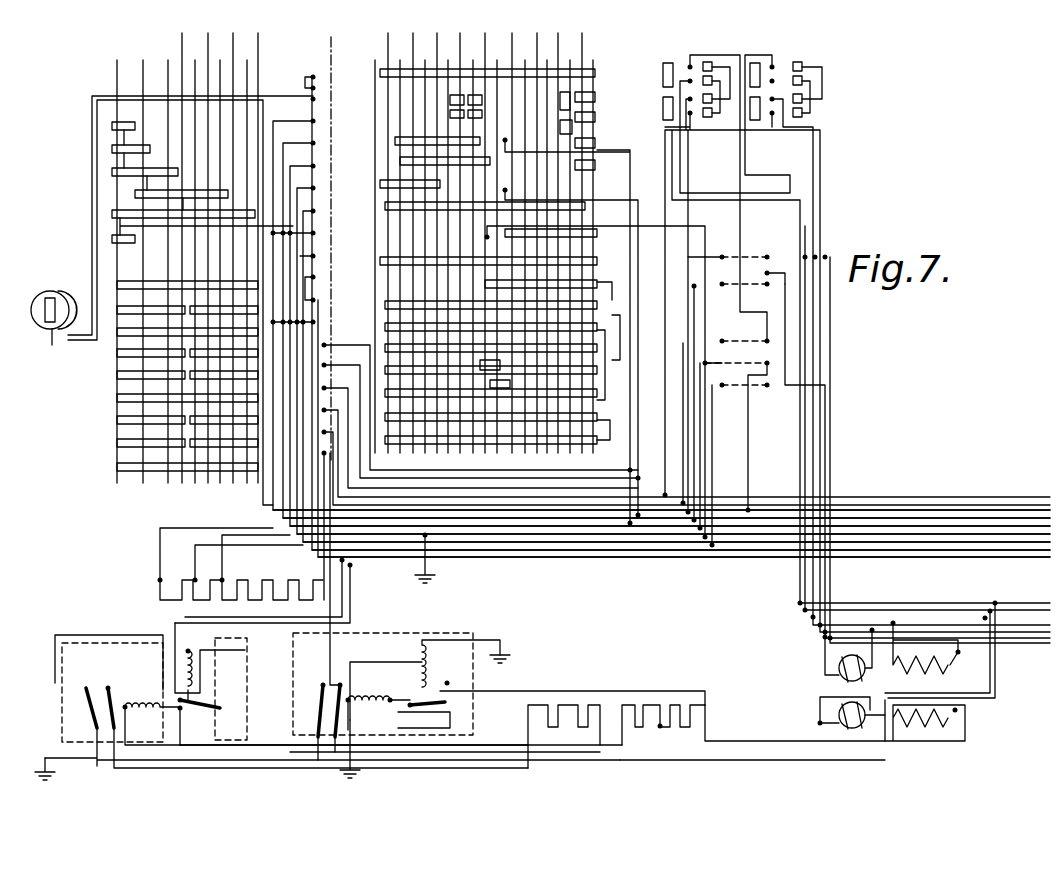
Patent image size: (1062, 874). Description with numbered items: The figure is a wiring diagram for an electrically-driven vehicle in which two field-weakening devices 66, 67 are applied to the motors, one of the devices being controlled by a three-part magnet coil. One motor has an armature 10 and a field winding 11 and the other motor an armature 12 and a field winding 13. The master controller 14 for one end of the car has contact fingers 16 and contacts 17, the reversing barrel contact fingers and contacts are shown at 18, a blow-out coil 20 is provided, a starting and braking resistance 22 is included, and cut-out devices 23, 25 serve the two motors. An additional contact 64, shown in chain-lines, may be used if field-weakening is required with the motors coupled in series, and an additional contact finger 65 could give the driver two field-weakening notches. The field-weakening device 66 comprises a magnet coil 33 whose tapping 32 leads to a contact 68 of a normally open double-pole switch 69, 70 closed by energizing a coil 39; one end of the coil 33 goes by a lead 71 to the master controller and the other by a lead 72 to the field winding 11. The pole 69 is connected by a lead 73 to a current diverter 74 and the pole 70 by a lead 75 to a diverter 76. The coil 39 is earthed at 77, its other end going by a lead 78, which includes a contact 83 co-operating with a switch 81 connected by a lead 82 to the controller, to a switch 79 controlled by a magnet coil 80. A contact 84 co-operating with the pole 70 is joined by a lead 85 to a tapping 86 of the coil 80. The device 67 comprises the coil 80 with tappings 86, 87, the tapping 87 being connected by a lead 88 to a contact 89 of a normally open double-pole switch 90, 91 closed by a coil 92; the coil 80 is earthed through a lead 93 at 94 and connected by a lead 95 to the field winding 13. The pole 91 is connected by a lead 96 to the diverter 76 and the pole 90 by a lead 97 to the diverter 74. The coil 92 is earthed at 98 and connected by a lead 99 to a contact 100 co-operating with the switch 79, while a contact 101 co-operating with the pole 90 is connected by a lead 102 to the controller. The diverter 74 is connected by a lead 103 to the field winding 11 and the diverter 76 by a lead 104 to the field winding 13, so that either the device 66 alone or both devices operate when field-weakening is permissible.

The armature 10 is at (830, 665).
The field winding 11 is at (955, 668).
The armature 12 is at (830, 712).
The field winding 13 is at (955, 718).
The master controller 14 is at (350, 248).
The contact fingers 16 is at (316, 121).
The contacts 17 is at (117, 400).
The reversing barrel contact fingers and contacts 18 is at (856, 334).
The blow-out coil 20 is at (54, 334).
The starting and braking resistance 22 is at (160, 580).
The cut-out device 23 is at (752, 342).
The cut-out device 25 is at (742, 260).
The tapping 32 is at (180, 672).
The magnet coil 33 is at (210, 658).
The coil 39 is at (153, 724).
The additional contact 64 is at (470, 92).
The additional contact finger 65 is at (316, 88).
The field-weakening device 66 is at (62, 665).
The field-weakening device 67 is at (405, 632).
The contact 68 is at (332, 711).
The switch pole 69 is at (85, 705).
The switch pole 70 is at (95, 715).
The lead 71 is at (175, 623).
The lead 72 is at (200, 617).
The lead 73 is at (97, 760).
The current diverter 74 is at (575, 705).
The lead 75 is at (140, 768).
The current diverter 76 is at (662, 705).
The earth 77 is at (45, 765).
The lead 78 is at (231, 729).
The switch 79 is at (448, 704).
The magnet coil 80 is at (557, 681).
The switch 81 is at (223, 697).
The lead 82 is at (245, 650).
The contact 83 is at (206, 729).
The contact 84 is at (110, 686).
The lead 85 is at (190, 748).
The tapping 86 is at (420, 680).
The tapping 87 is at (442, 663).
The lead 88 is at (364, 656).
The contact 89 is at (339, 705).
The switch pole 90 is at (271, 714).
The switch pole 91 is at (300, 725).
The coil 92 is at (318, 740).
The lead 93 is at (455, 640).
The earth 94 is at (520, 652).
The lead 95 is at (520, 691).
The lead 96 is at (460, 752).
The lead 97 is at (400, 755).
The earth 98 is at (358, 772).
The lead 99 is at (378, 714).
The contact 100 is at (425, 718).
The contact 101 is at (326, 699).
The lead 102 is at (330, 627).
The lead 103 is at (545, 765).
The lead 104 is at (733, 741).